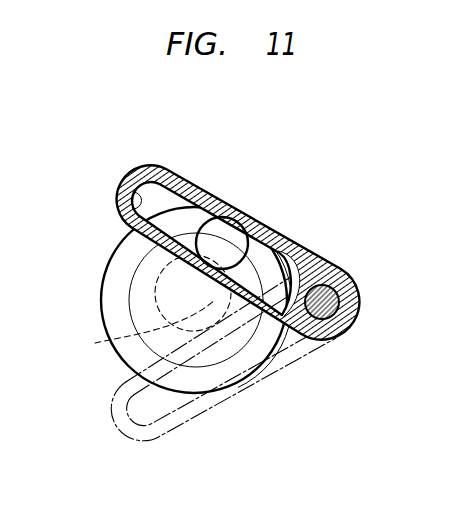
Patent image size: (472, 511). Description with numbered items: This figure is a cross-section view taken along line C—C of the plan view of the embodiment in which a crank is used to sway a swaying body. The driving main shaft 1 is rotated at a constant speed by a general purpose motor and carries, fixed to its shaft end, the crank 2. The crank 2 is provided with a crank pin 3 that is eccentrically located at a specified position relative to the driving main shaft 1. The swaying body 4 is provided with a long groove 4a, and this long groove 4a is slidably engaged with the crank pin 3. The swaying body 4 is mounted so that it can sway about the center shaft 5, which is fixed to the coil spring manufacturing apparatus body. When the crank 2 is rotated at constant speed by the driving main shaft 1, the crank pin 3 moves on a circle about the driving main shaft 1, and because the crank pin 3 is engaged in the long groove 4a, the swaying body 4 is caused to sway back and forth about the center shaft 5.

The driving main shaft 1 is at (100, 342).
The crank 2 is at (102, 287).
The crank pin 3 is at (229, 238).
The swaying body 4 is at (214, 241).
The long groove 4a is at (123, 182).
The center shaft 5 is at (329, 293).